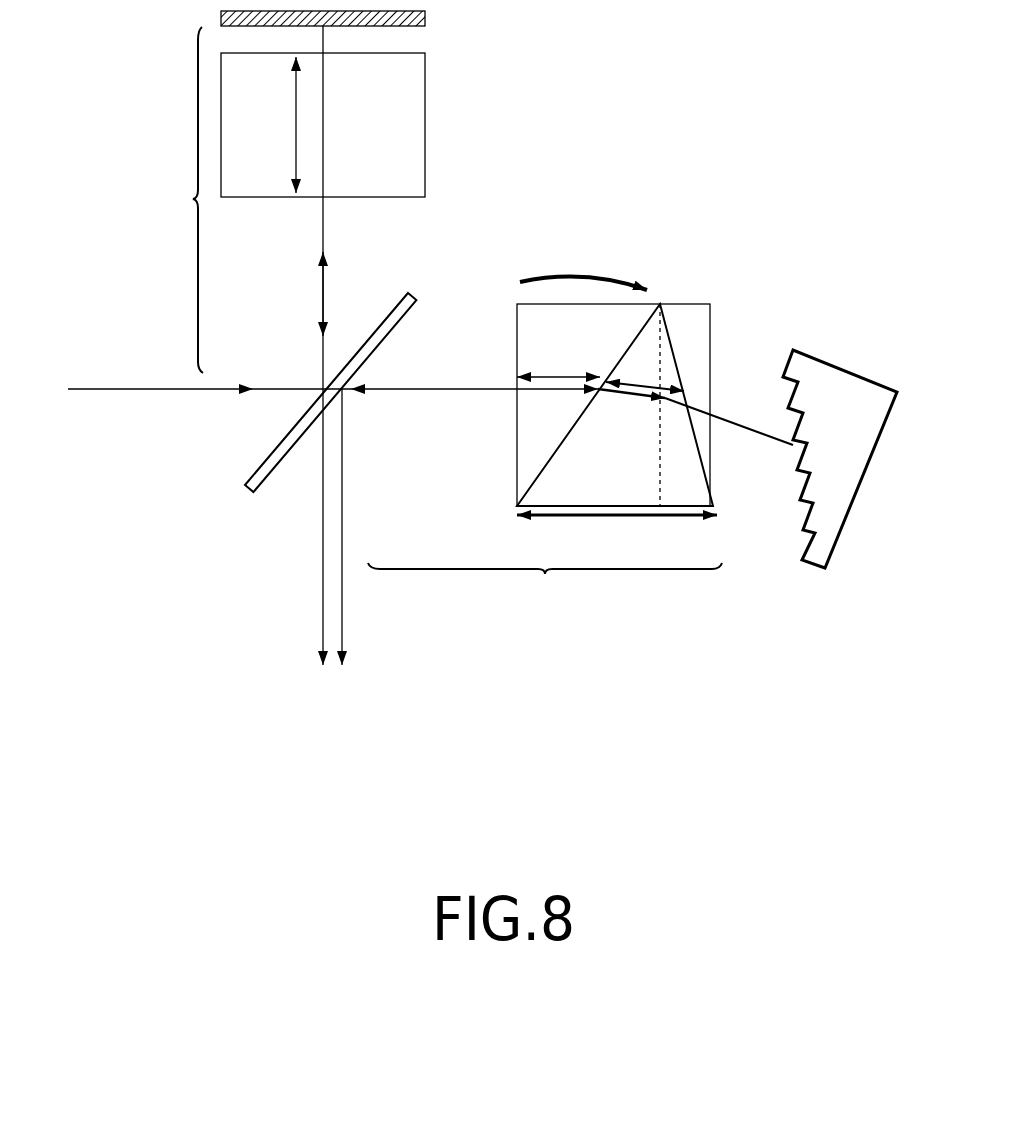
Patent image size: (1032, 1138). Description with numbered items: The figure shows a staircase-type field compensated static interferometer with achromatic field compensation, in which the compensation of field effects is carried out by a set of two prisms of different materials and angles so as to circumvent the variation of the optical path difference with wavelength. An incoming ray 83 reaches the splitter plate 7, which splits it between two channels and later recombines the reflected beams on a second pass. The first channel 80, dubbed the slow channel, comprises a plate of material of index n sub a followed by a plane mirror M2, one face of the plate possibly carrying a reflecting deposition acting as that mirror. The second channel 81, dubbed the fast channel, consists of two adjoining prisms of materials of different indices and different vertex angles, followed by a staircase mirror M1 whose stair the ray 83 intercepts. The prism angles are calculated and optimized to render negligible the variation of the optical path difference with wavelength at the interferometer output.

The first channel 80 is at (332, 334).
The second channel 81 is at (547, 590).
The ray 83 is at (113, 397).
The splitter plate 7 is at (235, 493).
The staircase mirror M1 is at (842, 547).
The plane mirror M2 is at (438, 17).